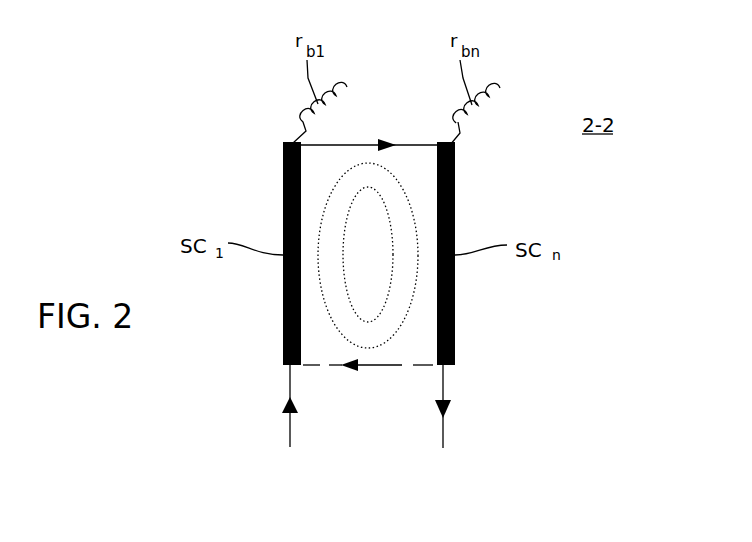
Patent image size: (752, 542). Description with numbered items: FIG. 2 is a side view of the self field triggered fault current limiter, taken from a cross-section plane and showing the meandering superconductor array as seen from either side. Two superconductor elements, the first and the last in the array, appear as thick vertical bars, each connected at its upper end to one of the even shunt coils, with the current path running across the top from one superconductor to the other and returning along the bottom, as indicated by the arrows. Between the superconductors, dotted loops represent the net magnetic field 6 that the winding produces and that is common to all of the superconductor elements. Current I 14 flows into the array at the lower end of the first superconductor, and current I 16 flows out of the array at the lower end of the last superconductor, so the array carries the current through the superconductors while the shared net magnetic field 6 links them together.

The net magnetic field 6 is at (328, 199).
The current I into the array 14 is at (290, 379).
The current I out of the array 16 is at (443, 430).